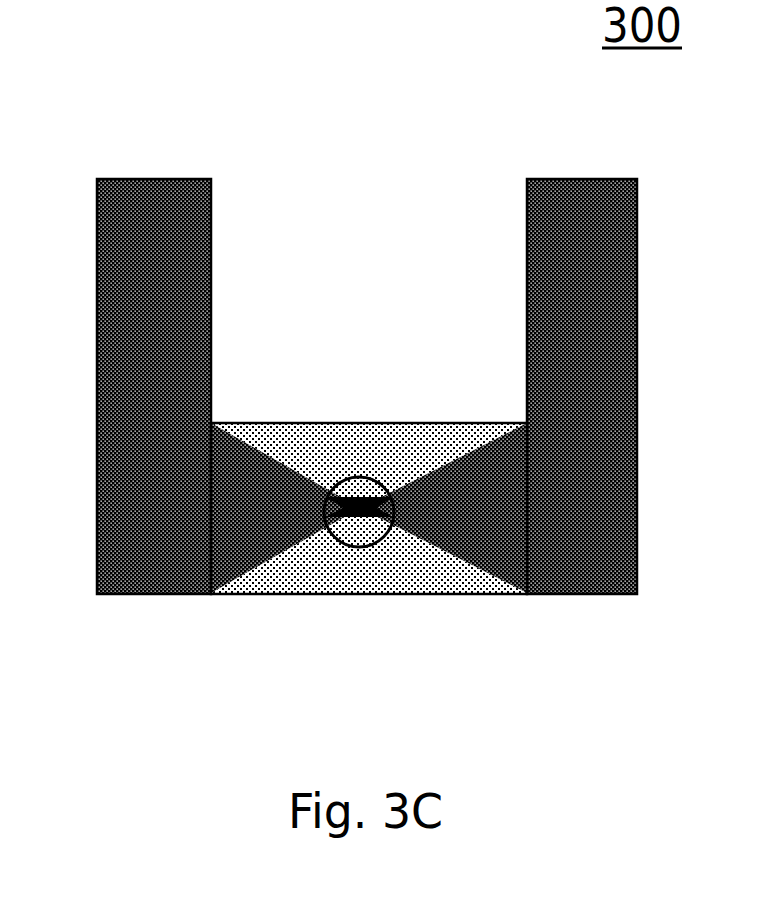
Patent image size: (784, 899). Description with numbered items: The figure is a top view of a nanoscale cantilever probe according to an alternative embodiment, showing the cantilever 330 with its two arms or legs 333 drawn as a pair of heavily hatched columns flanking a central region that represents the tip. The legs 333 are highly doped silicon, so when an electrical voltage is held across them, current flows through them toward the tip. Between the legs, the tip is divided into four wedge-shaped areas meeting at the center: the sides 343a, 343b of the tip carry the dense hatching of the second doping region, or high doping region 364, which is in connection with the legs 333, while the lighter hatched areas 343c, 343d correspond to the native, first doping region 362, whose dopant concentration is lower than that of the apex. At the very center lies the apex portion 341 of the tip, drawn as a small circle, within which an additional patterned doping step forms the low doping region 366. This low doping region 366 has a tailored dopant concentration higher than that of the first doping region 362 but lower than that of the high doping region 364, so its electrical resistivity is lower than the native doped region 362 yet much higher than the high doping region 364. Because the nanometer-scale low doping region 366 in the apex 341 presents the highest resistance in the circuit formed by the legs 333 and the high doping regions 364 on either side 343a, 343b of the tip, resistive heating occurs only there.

The cantilever 330 is at (694, 243).
The arms (or legs) of the cantilever 333 is at (160, 195).
The apex portion of the tip 341 is at (359, 462).
The side of the tip 343a is at (490, 472).
The side of the tip 343b is at (237, 462).
The third dielectric region 343c is at (428, 578).
The fourth dielectric region 343d is at (313, 442).
The first doping region 362 is at (296, 461).
The second doping region (high doping region) 364 is at (163, 534).
The low doping region 366 is at (377, 482).